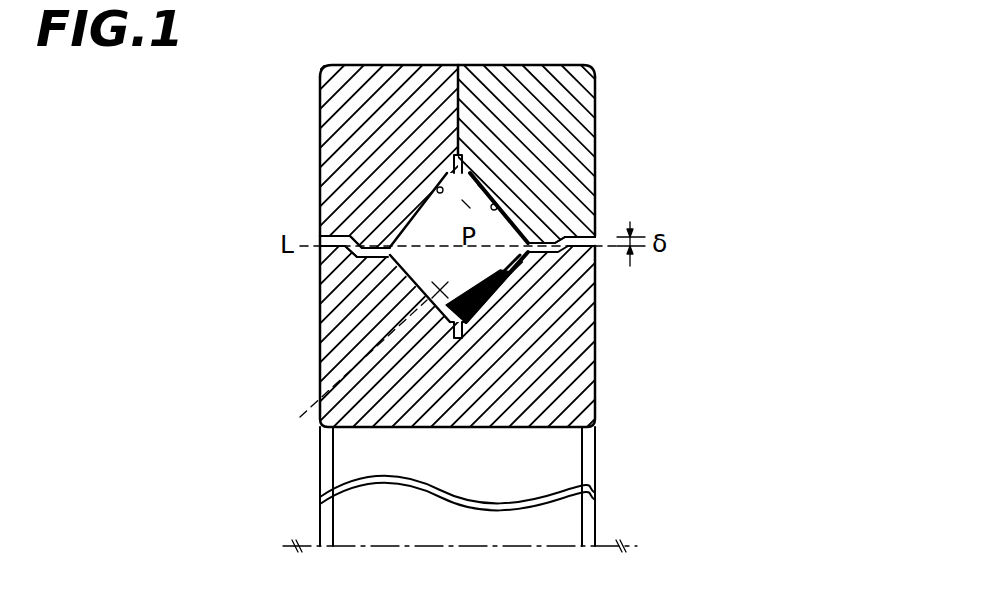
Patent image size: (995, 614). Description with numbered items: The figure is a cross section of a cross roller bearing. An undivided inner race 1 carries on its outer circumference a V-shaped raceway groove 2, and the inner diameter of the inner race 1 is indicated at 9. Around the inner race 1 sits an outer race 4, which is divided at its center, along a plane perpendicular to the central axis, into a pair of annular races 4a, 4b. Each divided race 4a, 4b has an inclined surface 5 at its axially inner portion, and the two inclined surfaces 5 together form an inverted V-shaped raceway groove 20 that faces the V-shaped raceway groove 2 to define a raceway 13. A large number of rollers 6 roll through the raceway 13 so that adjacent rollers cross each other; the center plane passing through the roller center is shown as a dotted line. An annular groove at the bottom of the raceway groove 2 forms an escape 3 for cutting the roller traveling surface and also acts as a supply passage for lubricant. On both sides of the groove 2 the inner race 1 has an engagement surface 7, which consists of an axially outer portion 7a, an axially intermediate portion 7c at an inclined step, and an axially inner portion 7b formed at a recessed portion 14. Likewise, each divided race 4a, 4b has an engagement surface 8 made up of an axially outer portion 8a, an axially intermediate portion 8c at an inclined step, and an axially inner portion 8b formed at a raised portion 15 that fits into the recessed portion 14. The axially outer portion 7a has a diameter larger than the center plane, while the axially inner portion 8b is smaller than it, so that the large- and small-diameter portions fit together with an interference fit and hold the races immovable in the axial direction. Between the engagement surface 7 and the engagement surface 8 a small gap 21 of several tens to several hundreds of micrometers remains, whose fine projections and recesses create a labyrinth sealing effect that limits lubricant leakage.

The inner race 1 is at (540, 388).
The V-shaped raceway groove 2 is at (300, 417).
The escape 3 is at (467, 332).
The outer race 4 is at (601, 77).
The divided annular race 4a is at (515, 75).
The divided annular race 4b is at (380, 80).
The inclined surface 5 is at (440, 188).
The roller 6 is at (320, 92).
The engagement surface 7 is at (722, 135).
The axially outer portion 7a is at (560, 249).
The axially inner portion 7b is at (553, 240).
The axially intermediate portion 7c is at (556, 244).
The engagement surface 8 is at (236, 270).
The axially outer portion 8a is at (350, 253).
The axially inner portion 8b is at (365, 262).
The axially intermediate portion 8c is at (355, 260).
The inner diameter 9 is at (428, 428).
The raceway 13 is at (451, 241).
The recessed portion 14 is at (527, 253).
The raised portion 15 is at (370, 238).
The inverted V-shaped raceway groove 20 is at (478, 200).
The gap 21 is at (320, 238).